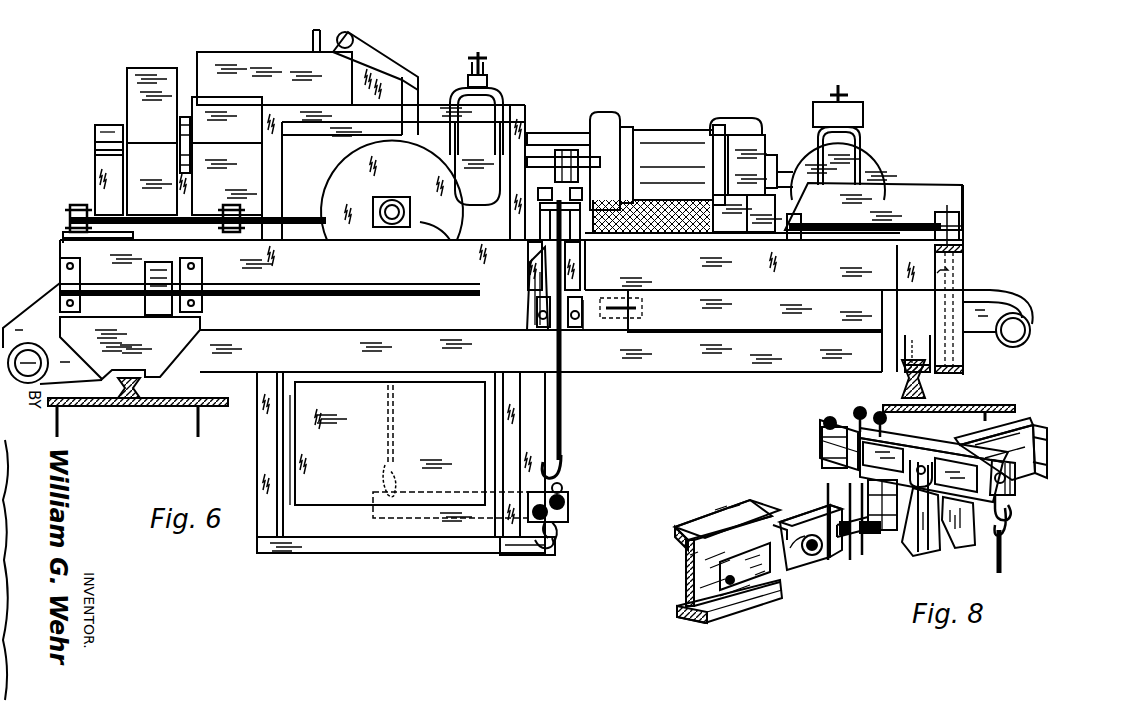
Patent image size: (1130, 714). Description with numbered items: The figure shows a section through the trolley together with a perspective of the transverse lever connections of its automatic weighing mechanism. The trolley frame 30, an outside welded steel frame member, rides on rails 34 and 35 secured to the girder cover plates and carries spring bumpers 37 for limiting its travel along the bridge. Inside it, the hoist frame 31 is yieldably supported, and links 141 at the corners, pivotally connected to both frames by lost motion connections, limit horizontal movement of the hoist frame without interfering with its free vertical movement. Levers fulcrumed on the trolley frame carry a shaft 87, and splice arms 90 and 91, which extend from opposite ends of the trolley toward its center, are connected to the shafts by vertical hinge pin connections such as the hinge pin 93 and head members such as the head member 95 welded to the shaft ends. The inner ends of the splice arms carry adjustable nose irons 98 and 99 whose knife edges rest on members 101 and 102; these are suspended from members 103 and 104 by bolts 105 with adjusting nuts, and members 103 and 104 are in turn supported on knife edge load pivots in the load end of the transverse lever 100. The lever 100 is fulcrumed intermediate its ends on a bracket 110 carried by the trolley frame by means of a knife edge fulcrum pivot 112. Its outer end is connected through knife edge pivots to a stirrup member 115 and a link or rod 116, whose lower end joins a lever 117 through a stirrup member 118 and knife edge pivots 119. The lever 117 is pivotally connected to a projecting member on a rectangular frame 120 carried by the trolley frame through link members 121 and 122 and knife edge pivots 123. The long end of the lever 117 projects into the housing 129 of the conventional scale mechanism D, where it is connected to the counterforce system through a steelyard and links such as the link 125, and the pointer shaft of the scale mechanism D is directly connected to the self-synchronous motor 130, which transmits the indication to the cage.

In FIG. 6, the trolley frame 30 is at (70, 255).
In FIG. 6, the hoist frame 31 is at (100, 184).
In FIG. 6, the rail 34 is at (138, 391).
In FIG. 6, the rail 35 is at (925, 383).
In FIG. 6, the spring bumper 37 is at (51, 348).
In FIG. 6, the shaft 87 is at (1033, 320).
In FIG. 6, the splice arm 90 is at (803, 302).
In FIG. 8, the splice arm 90 is at (707, 527).
In FIG. 8, the splice arm 91 is at (1038, 430).
In FIG. 6, the vertical hinge pin connection 93 is at (948, 274).
In FIG. 6, the head member 95 is at (1002, 292).
In FIG. 6, the adjustable nose iron 98 is at (530, 308).
In FIG. 8, the adjustable nose iron 98 is at (805, 575).
In FIG. 6, the adjustable nose iron 99 is at (632, 330).
In FIG. 8, the adjustable nose iron 99 is at (883, 530).
In FIG. 6, the transverse lever 100 is at (566, 150).
In FIG. 8, the transverse lever 100 is at (1015, 492).
In FIG. 6, the member 101 is at (545, 332).
In FIG. 8, the member 101 is at (840, 553).
In FIG. 6, the member 102 is at (580, 328).
In FIG. 8, the member 102 is at (877, 543).
In FIG. 8, the member 103 is at (822, 440).
In FIG. 8, the member 104 is at (870, 418).
In FIG. 6, the bolt 105 is at (575, 297).
In FIG. 8, the bolt 105 is at (830, 478).
In FIG. 6, the bracket 110 is at (582, 242).
In FIG. 8, the bracket 110 is at (962, 537).
In FIG. 8, the knife edge fulcrum pivot 112 is at (922, 460).
In FIG. 8, the stirrup member 115 is at (1010, 512).
In FIG. 6, the link or rod 116 is at (561, 410).
In FIG. 8, the link or rod 116 is at (1003, 552).
In FIG. 6, the lever 117 is at (570, 515).
In FIG. 6, the stirrup member 118 is at (568, 470).
In FIG. 6, the knife edge pivots 119 is at (570, 502).
In FIG. 6, the rectangular frame 120 is at (451, 553).
In FIG. 6, the link member 121 is at (555, 525).
In FIG. 6, the link member 122 is at (548, 550).
In FIG. 6, the knife edge pivots 123 is at (503, 538).
In FIG. 6, the link 125 is at (390, 418).
In FIG. 6, the housing 129 is at (345, 515).
In FIG. 6, the self-synchronous motor 130 is at (380, 200).
In FIG. 6, the link 141 is at (203, 220).
In FIG. 6, the scale mechanism D is at (440, 235).